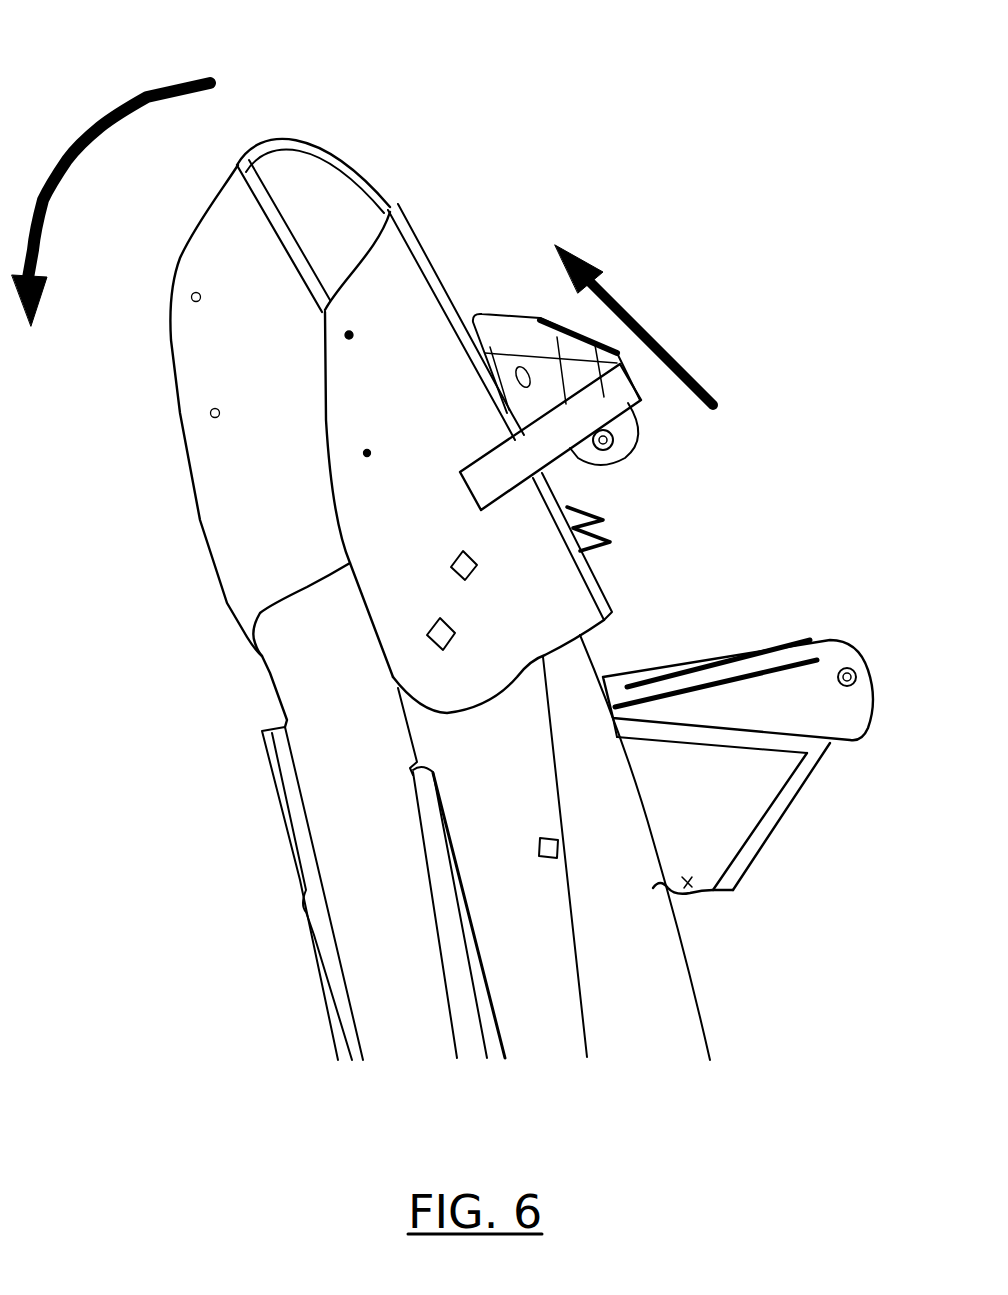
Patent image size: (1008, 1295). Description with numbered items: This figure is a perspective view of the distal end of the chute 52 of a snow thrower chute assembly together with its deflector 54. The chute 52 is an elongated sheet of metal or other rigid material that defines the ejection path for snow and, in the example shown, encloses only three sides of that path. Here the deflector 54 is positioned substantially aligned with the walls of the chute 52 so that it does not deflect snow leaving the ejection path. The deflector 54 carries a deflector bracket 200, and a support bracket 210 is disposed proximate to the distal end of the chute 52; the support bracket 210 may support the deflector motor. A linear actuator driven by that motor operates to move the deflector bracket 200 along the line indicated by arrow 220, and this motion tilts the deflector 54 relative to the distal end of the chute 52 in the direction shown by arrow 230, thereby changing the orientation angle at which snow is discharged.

The chute 52 is at (378, 880).
The deflector 54 is at (333, 177).
The deflector bracket 200 is at (592, 417).
The support bracket 210 is at (825, 680).
The arrow 220 is at (648, 330).
The arrow 230 is at (148, 93).